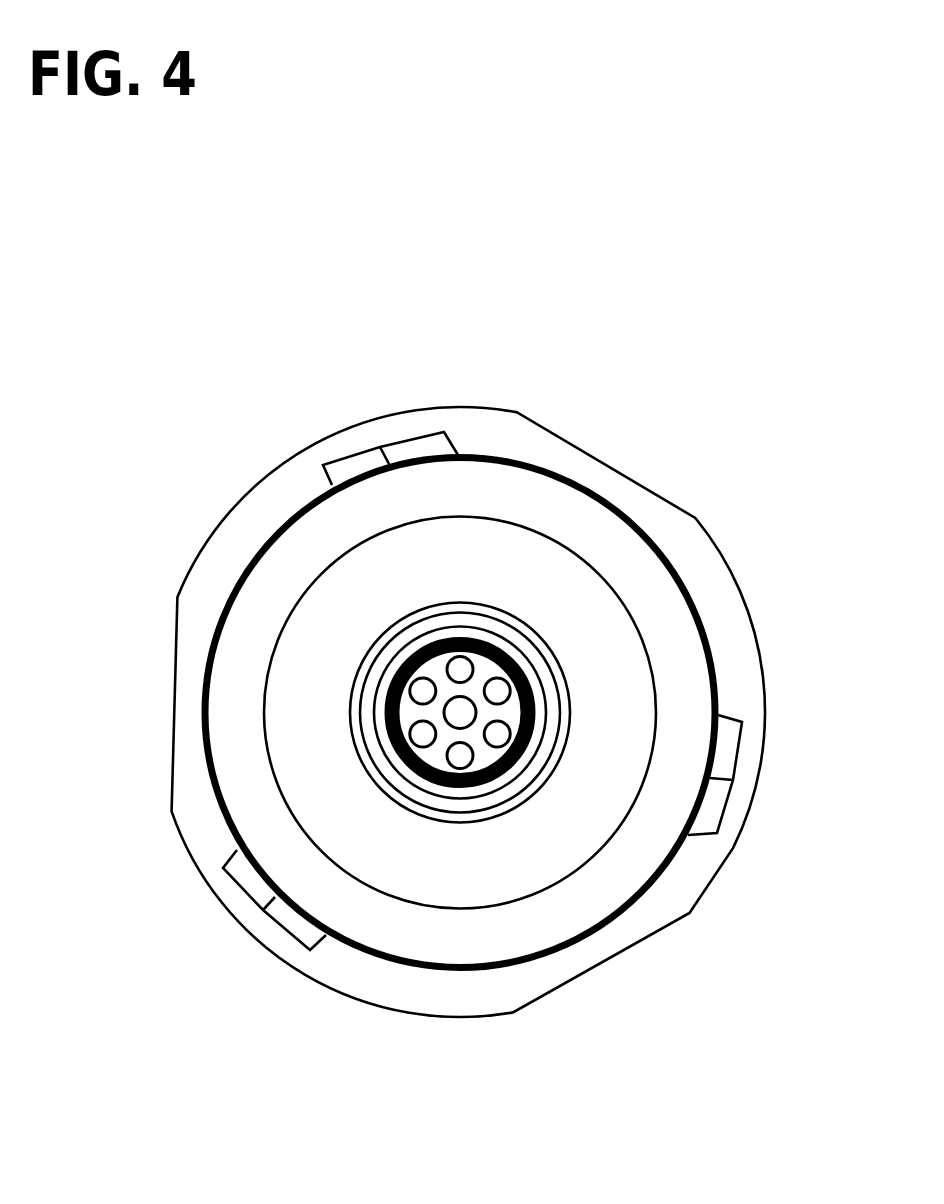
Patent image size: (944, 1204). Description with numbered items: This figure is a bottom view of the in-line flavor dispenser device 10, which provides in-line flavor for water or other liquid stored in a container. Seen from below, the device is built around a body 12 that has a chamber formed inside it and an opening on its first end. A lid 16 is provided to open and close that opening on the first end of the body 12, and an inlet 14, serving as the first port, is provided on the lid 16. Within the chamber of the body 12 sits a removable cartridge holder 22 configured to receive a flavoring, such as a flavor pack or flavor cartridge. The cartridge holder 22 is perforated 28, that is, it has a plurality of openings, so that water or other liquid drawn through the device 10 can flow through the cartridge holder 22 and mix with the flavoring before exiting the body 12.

The in-line flavor dispenser device 10 is at (740, 392).
The body 12 is at (707, 635).
The inlet 14 is at (500, 655).
The lid 16 is at (733, 848).
The cartridge holder 22 is at (430, 763).
The perforations 28 is at (473, 727).